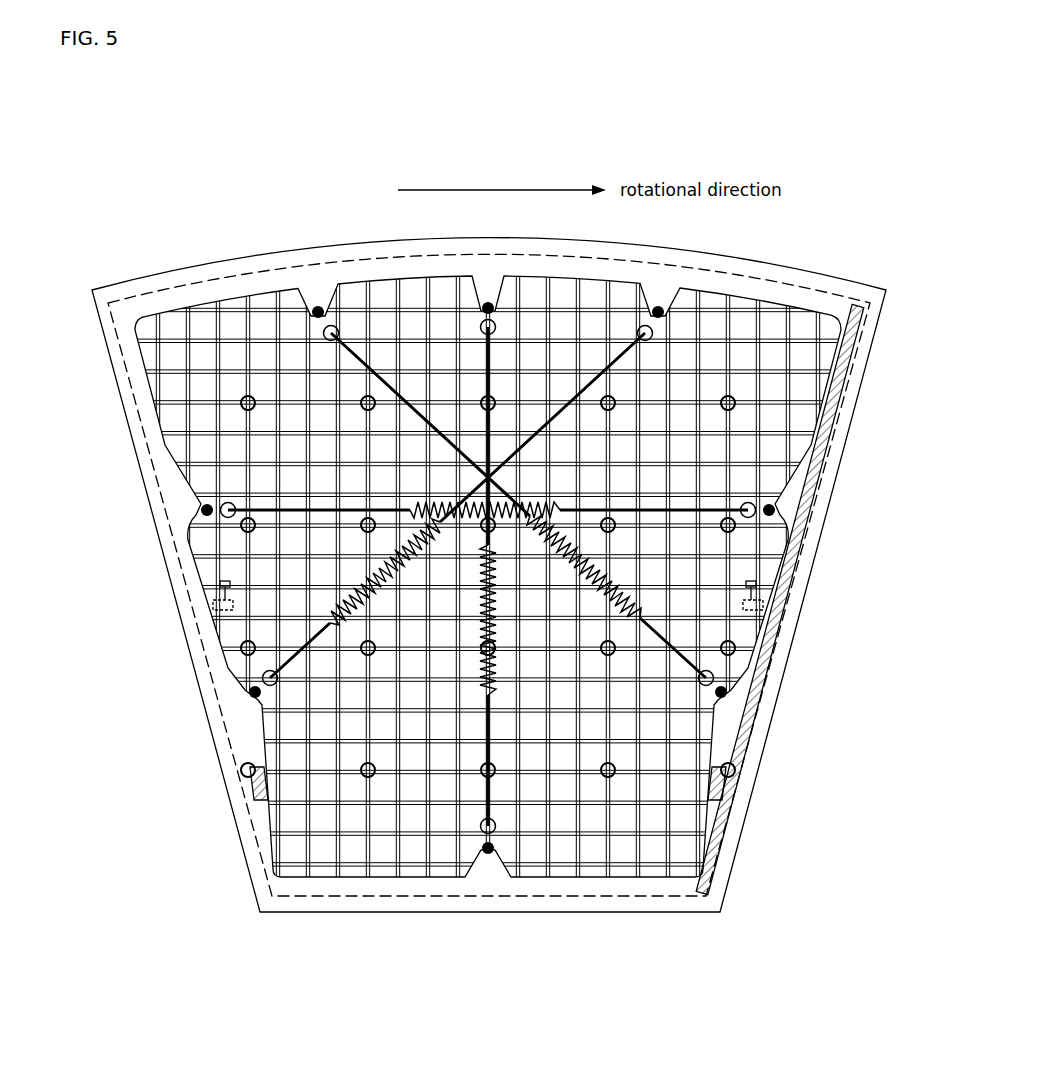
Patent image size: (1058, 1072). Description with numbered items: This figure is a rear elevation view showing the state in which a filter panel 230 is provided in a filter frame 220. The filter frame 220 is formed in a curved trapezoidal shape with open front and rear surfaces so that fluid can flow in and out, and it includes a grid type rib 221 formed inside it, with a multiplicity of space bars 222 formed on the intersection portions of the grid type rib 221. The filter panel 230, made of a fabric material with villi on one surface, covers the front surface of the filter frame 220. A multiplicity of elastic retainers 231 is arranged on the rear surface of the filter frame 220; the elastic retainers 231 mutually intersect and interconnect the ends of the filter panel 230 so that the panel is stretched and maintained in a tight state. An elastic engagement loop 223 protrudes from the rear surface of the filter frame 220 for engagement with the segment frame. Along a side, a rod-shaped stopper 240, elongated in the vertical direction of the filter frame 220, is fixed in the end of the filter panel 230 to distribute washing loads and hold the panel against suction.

The filter frame 220 is at (205, 282).
The filter panel 230 is at (340, 252).
The grid type rib 221 is at (245, 453).
The space bar 222 is at (613, 767).
The elastic engagement loop 223 is at (213, 598).
The elastic retainer 231 is at (333, 643).
The rod-shaped stopper 240 is at (803, 555).